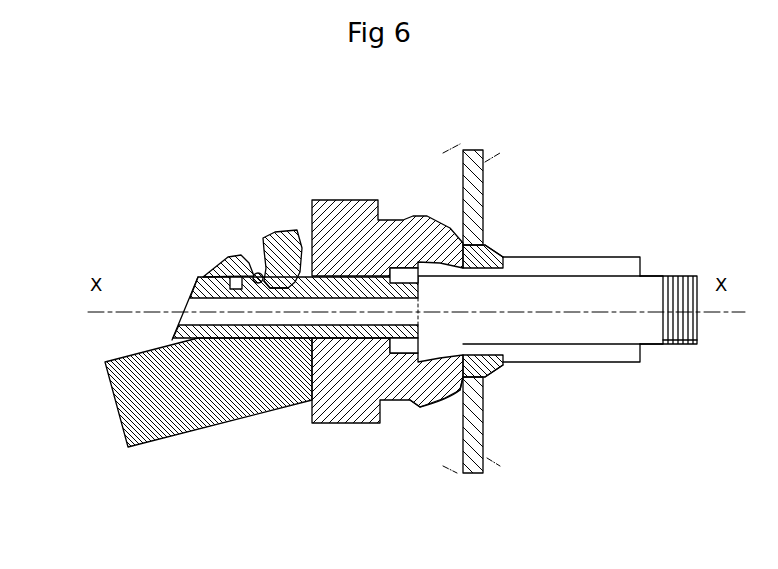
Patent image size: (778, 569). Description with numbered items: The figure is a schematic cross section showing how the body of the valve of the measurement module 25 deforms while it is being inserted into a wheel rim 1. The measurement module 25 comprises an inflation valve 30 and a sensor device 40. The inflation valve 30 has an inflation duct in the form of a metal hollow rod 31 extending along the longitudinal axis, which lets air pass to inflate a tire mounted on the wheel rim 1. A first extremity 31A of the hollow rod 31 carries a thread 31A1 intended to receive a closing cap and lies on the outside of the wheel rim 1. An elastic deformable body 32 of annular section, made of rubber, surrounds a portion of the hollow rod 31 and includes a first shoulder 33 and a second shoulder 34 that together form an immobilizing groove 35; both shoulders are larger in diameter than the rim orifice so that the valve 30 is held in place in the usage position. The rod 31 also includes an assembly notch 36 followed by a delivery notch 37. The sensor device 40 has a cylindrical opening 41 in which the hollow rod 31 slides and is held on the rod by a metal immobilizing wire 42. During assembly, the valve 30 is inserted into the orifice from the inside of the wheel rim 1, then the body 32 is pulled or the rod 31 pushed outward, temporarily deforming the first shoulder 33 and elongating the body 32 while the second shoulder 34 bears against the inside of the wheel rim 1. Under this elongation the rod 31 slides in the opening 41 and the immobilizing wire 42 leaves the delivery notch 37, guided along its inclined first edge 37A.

The wheel rim 1 is at (480, 190).
The measurement module 25 is at (188, 189).
The inflation valve 30 is at (520, 238).
The hollow rod 31 is at (203, 345).
The first extremity 31A is at (700, 330).
The thread 31A1 is at (687, 345).
The deformable body 32 is at (533, 362).
The first shoulder 33 is at (417, 407).
The second shoulder 34 is at (340, 423).
The immobilizing groove 35 is at (403, 220).
The assembly notch 36 is at (233, 257).
The delivery notch 37 is at (288, 287).
The inclined first edge 37A is at (293, 283).
The sensor device 40 is at (104, 438).
The cylindrical opening 41 is at (198, 278).
The immobilizing wire 42 is at (253, 275).